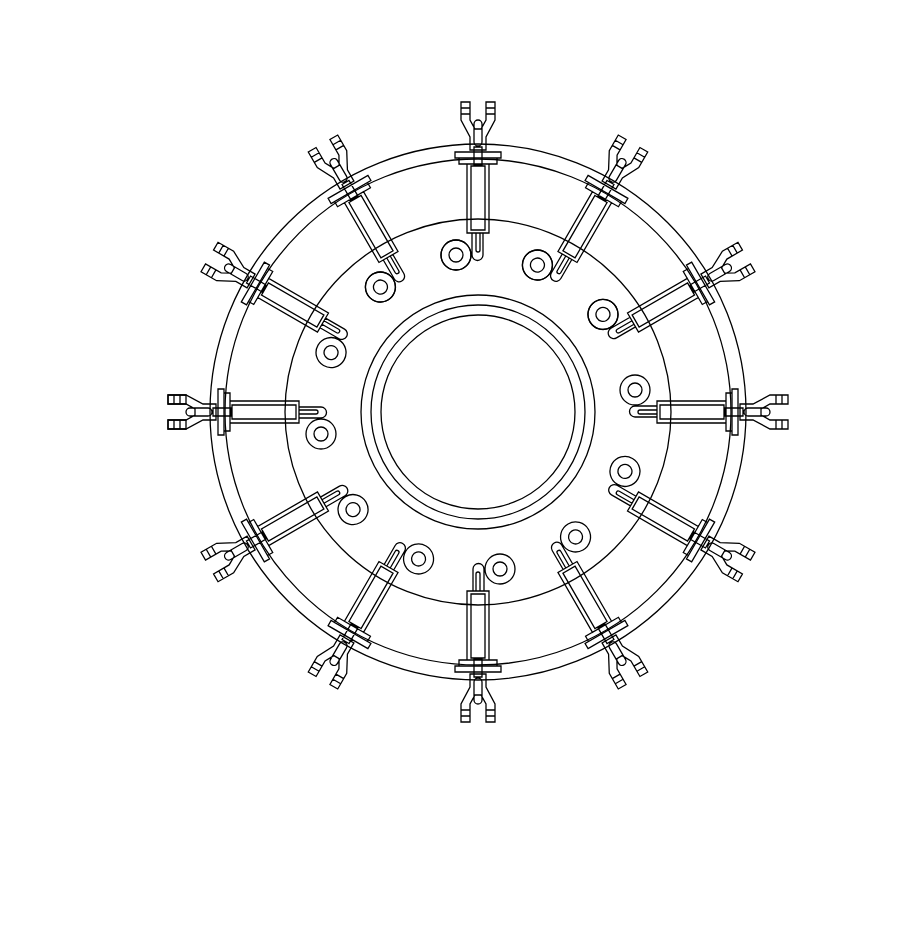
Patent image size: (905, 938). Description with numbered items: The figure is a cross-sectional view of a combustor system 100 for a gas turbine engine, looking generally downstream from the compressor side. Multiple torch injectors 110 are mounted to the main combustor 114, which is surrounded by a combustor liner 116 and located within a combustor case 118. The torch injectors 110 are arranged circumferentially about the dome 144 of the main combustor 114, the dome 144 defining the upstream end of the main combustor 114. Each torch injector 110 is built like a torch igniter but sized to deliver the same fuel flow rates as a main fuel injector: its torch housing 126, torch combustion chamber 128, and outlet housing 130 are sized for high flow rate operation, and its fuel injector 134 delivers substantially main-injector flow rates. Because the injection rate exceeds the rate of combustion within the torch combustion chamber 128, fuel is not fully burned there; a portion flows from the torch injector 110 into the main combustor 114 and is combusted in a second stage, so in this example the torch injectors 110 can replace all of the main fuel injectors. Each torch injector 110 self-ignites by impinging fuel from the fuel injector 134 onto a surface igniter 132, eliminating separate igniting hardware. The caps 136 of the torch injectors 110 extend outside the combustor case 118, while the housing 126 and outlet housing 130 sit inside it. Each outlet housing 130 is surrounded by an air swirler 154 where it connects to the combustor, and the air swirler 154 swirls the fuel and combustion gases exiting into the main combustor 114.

The combustor system 100 is at (240, 88).
The torch injector 110 is at (148, 381).
The main combustor 114 is at (449, 207).
The combustor liner 116 is at (680, 478).
The combustor case 118 is at (682, 232).
The torch housing 126 is at (271, 402).
The torch combustion chamber 128 is at (257, 436).
The outlet housing 130 is at (599, 348).
The surface igniter 132 is at (162, 400).
The fuel injector 134 is at (196, 441).
The cap 136 is at (224, 238).
The dome 144 is at (328, 481).
The air swirler 154 is at (457, 289).